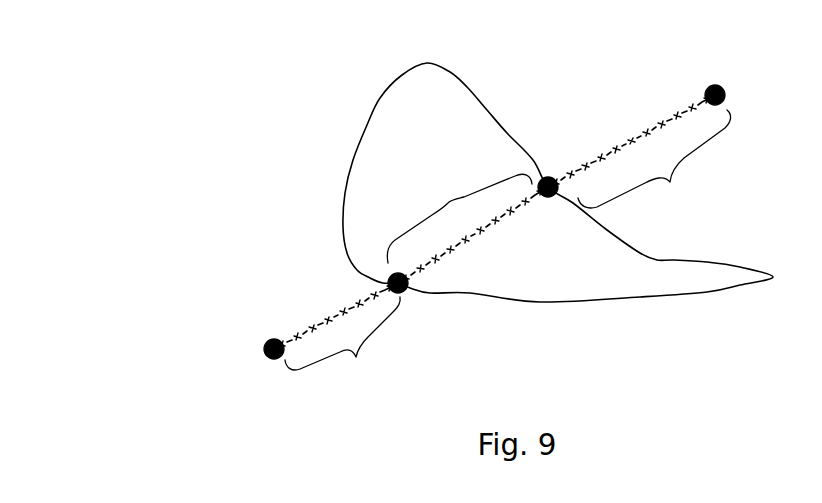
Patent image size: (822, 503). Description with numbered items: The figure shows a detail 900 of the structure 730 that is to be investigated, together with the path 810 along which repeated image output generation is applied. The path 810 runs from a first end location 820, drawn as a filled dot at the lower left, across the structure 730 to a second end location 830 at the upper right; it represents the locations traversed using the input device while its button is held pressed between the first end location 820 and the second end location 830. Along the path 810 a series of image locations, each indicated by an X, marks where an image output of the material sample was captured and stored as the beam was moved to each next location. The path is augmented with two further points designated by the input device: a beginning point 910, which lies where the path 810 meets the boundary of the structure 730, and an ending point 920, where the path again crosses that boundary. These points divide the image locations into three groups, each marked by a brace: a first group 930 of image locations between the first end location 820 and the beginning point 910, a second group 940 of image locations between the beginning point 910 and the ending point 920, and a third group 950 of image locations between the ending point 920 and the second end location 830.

The detail 900 is at (87, 61).
The structure 730 is at (366, 128).
The path 810 is at (290, 337).
The first end location 820 is at (261, 328).
The second end location 830 is at (736, 72).
The beginning point 910 is at (388, 283).
The ending point 920 is at (553, 177).
The first group of image locations 930 is at (342, 339).
The second group of image locations 940 is at (459, 219).
The third group of image locations 950 is at (654, 160).